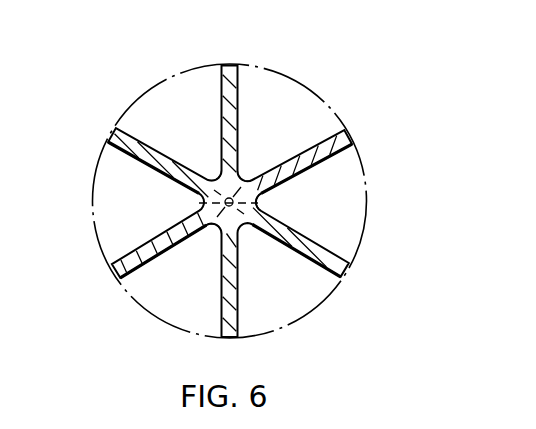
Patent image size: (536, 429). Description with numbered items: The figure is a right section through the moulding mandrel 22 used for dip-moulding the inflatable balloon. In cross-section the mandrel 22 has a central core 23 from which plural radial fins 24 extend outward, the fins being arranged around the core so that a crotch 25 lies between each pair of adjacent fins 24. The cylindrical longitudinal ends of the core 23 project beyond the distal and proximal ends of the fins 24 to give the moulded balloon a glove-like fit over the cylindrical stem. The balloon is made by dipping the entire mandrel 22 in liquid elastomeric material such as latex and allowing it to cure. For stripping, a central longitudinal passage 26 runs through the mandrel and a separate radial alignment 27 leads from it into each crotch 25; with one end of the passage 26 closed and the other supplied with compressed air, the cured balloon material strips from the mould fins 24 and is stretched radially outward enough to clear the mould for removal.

The moulding mandrel 22 is at (364, 137).
The central core 23 is at (201, 212).
The radial fins 24 is at (221, 119).
The crotch 25 is at (280, 128).
The central longitudinal passage 26 is at (246, 178).
The radial alignment 27 is at (218, 182).